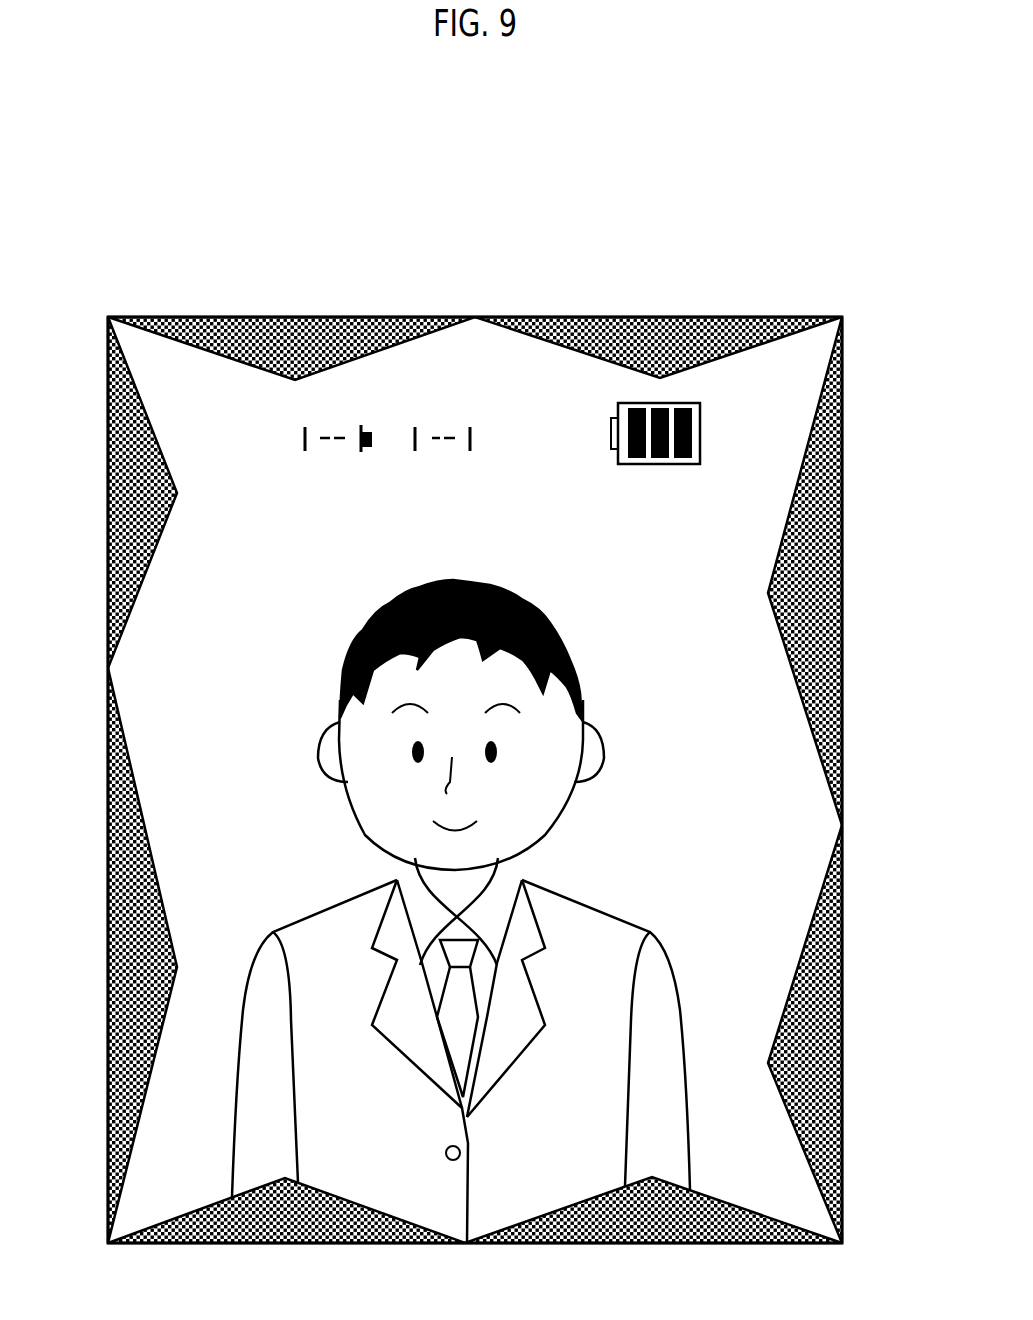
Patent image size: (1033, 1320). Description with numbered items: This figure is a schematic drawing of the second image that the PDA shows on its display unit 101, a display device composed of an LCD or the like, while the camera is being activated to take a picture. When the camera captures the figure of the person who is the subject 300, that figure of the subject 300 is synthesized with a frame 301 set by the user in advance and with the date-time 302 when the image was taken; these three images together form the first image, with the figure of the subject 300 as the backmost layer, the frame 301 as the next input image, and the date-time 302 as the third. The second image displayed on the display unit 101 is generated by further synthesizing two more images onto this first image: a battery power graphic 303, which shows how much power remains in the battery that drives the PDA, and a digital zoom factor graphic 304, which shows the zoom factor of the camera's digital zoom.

The display unit 101 is at (608, 253).
The figure 300 is at (520, 591).
The frame 301 is at (823, 567).
The date-time 302 is at (747, 1144).
The battery power graphic 303 is at (700, 401).
The digital zoom factor graphic 304 is at (229, 430).